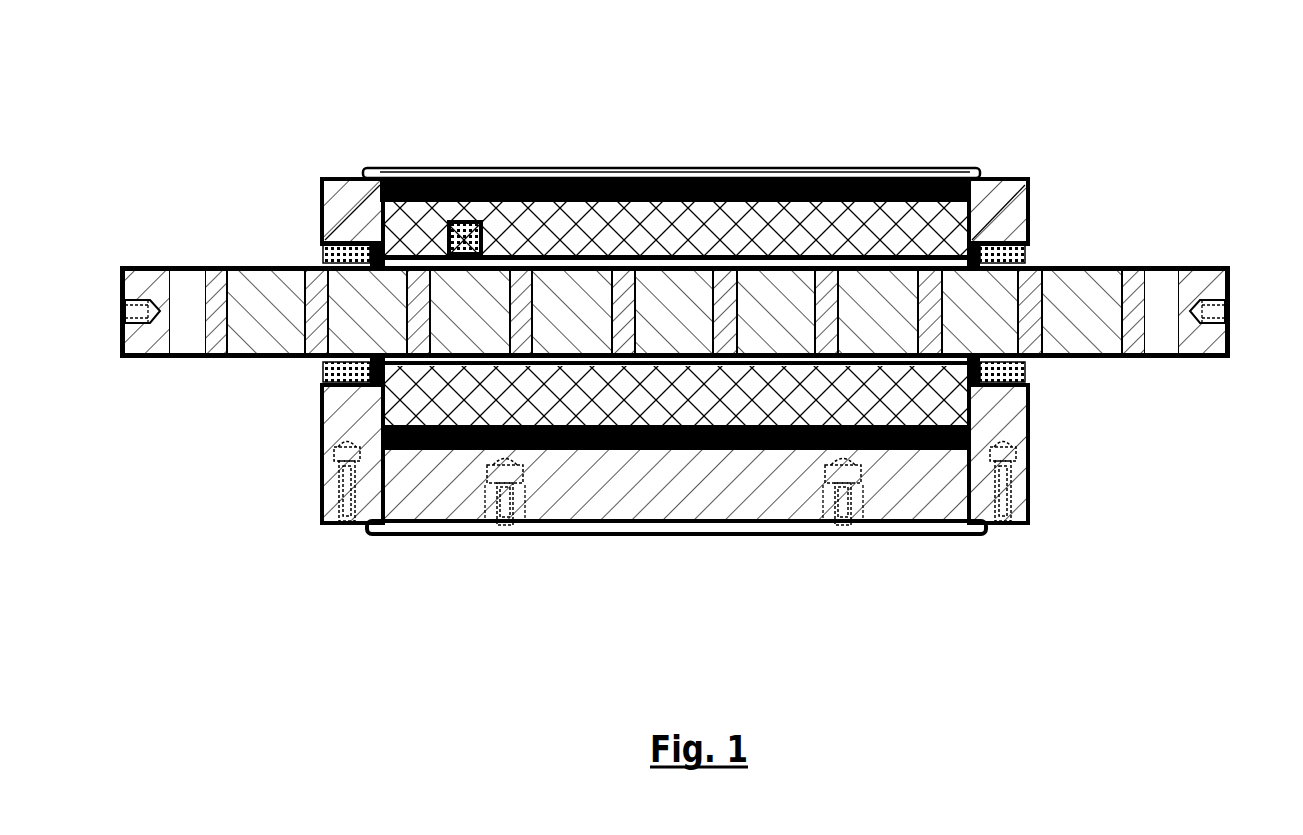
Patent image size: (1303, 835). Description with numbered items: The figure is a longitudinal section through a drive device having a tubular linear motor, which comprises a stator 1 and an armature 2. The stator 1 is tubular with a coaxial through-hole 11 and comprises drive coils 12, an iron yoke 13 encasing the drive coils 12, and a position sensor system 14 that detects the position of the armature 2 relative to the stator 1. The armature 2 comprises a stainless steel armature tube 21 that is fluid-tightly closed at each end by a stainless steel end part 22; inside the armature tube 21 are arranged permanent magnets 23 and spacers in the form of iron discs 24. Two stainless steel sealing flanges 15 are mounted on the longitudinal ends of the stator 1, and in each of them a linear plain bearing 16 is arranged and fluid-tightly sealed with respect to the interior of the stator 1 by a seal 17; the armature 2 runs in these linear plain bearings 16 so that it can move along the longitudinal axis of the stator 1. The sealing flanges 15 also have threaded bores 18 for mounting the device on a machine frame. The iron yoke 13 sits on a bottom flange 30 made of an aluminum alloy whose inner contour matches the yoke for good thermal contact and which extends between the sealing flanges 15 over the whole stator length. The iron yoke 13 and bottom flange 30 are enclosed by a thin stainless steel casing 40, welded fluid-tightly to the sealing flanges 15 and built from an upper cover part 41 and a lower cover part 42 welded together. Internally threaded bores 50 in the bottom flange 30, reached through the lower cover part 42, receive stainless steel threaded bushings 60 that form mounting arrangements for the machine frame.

The stator 1 is at (639, 163).
The armature 2 is at (1162, 253).
The coaxial through-hole 11 is at (865, 230).
The drive coils 12 is at (775, 215).
The iron yoke 13 is at (540, 168).
The position sensor system 14 is at (462, 220).
The sealing flanges 15 is at (330, 428).
The linear plain bearing 16 is at (318, 252).
The seal 17 is at (340, 205).
The threaded bores 18 is at (344, 525).
The armature tube 21 is at (185, 265).
The end part 22 is at (125, 358).
The permanent magnets 23 is at (270, 358).
The iron discs 24 is at (1136, 358).
The bottom flange 30 is at (722, 536).
The casing 40 is at (440, 551).
The upper cover part 41 is at (394, 168).
The lower cover part 42 is at (680, 536).
The bores 50 is at (550, 530).
The threaded bushing 60 is at (505, 535).